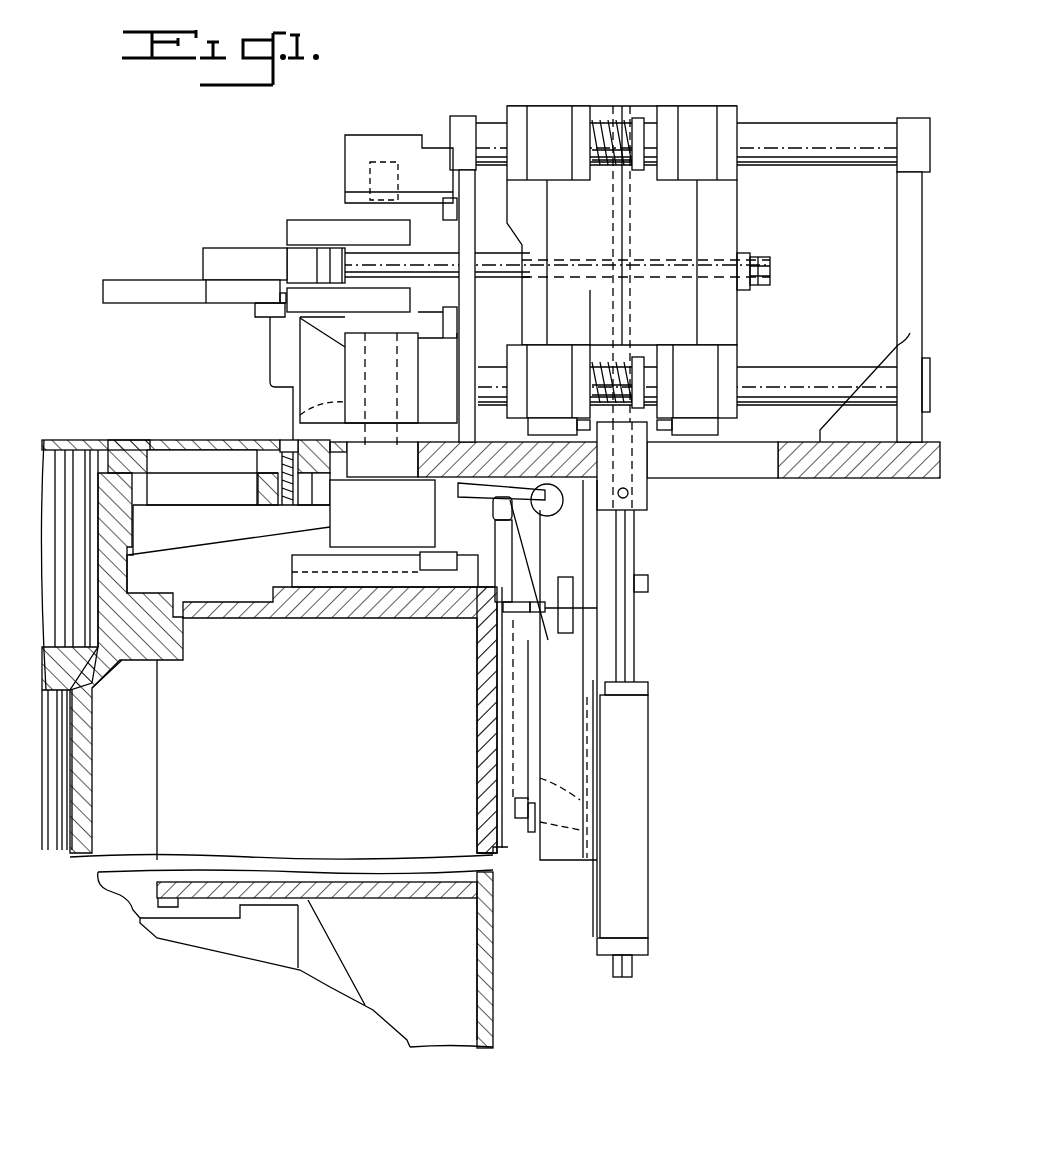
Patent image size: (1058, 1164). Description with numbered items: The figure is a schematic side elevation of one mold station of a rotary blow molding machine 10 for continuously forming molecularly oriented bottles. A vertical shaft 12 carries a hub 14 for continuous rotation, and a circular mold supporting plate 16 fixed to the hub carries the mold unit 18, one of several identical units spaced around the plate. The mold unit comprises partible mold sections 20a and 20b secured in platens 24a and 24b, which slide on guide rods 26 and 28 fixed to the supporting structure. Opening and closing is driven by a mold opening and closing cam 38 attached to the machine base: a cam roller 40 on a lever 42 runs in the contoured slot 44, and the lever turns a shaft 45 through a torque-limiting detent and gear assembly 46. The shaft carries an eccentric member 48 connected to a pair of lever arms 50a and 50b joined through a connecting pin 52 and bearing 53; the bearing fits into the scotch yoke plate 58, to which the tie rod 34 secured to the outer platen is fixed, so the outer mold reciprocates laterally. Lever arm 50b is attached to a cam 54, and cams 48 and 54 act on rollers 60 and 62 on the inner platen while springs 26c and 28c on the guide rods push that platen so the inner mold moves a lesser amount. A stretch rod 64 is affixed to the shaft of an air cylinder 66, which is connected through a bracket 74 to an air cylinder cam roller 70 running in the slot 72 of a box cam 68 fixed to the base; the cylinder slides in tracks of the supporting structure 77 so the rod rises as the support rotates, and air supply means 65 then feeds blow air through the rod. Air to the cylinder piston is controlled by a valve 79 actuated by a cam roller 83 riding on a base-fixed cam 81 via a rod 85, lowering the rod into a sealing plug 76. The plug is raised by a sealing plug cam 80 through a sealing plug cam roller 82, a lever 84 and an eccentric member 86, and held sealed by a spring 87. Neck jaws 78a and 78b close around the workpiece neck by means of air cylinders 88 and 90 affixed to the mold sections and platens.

The rotary blow molding machine 10 is at (818, 665).
The vertical shaft 12 is at (45, 855).
The hub 14 is at (85, 820).
The mold supporting plate 16 is at (886, 480).
The mold unit 18 is at (580, 95).
The inner mold section 20a is at (605, 112).
The outer mold section 20b is at (640, 115).
The inner mold platen 24a is at (542, 112).
The outer mold platen 24b is at (700, 115).
The guide rod 26 is at (796, 130).
The spring 26c is at (607, 166).
The guide rod 28 is at (822, 372).
The spring 28c is at (600, 362).
The tie rod 34 is at (594, 262).
The mold opening and closing cam 38 is at (292, 562).
The cam roller 40 is at (448, 558).
The lever 42 is at (448, 532).
The contoured slot 44 is at (345, 608).
The shaft 45 is at (300, 410).
The detent and gear assembly 46 is at (330, 515).
The eccentric member 48 is at (424, 320).
The lever arm 50a is at (275, 310).
The lever arm 50b is at (322, 222).
The connecting pin 52 is at (305, 252).
The bearing 53 is at (296, 260).
The cam 54 is at (352, 205).
The scotch yoke plate 58 is at (217, 258).
The roller 60 is at (486, 325).
The roller 62 is at (455, 215).
The stretch rod 64 is at (630, 252).
The air supply means 65 is at (648, 583).
The air cylinder 66 is at (638, 898).
The air cylinder cam 68 is at (515, 758).
The air cylinder cam roller 70 is at (524, 820).
The slot 72 is at (530, 688).
The bracket 74 is at (575, 795).
The sealing plug 76 is at (632, 495).
The supporting structure 77 is at (573, 565).
The neck jaw 78a is at (595, 425).
The neck jaw 78b is at (660, 425).
The valve 79 is at (565, 577).
The sealing plug cam 80 is at (497, 563).
The cam 81 is at (525, 580).
The sealing plug cam roller 82 is at (490, 504).
The cam roller 83 is at (540, 602).
The lever 84 is at (648, 512).
The rod 85 is at (550, 610).
The eccentric member 86 is at (540, 514).
The spring 87 is at (652, 460).
The air cylinder 88 is at (528, 427).
The air cylinder 90 is at (710, 428).